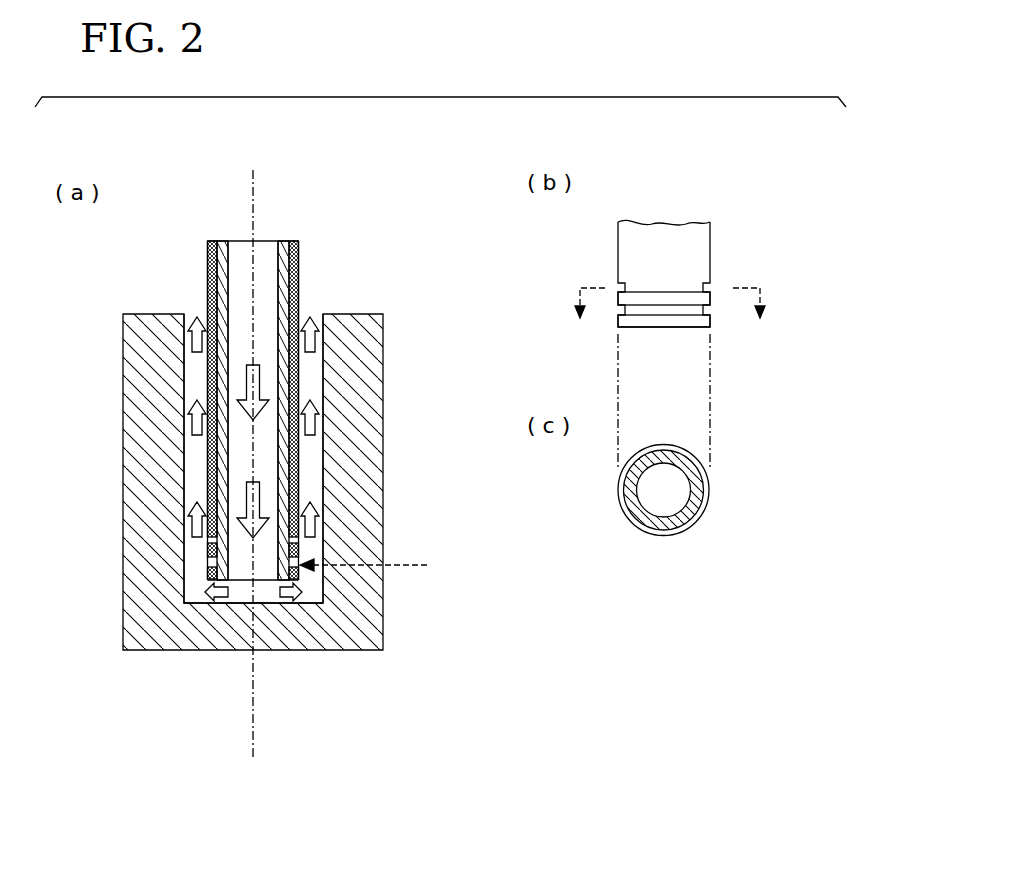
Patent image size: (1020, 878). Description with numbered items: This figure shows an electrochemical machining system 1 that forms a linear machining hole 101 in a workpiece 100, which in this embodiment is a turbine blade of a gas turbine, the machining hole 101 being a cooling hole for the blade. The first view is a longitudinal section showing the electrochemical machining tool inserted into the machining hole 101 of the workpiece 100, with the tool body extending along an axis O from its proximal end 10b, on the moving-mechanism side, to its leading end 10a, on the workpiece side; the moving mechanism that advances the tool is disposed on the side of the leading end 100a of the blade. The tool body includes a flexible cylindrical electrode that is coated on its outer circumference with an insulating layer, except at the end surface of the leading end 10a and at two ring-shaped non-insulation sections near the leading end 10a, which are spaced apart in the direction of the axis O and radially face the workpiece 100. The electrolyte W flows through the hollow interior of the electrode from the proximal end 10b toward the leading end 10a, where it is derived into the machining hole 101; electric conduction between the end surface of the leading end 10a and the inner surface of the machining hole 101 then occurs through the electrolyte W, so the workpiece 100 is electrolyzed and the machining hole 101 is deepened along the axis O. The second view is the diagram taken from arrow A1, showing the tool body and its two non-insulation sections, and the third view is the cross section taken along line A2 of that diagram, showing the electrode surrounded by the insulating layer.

The electrochemical machining system 1 is at (407, 668).
The leading end 10a is at (285, 581).
The proximal end 10b is at (282, 240).
The workpiece 100 is at (360, 628).
The leading end 100a is at (373, 313).
The machining hole 101 is at (188, 382).
The electrolyte W is at (192, 522).
The axis O is at (256, 743).
The arrow A1 is at (378, 564).
The line A2 is at (673, 302).